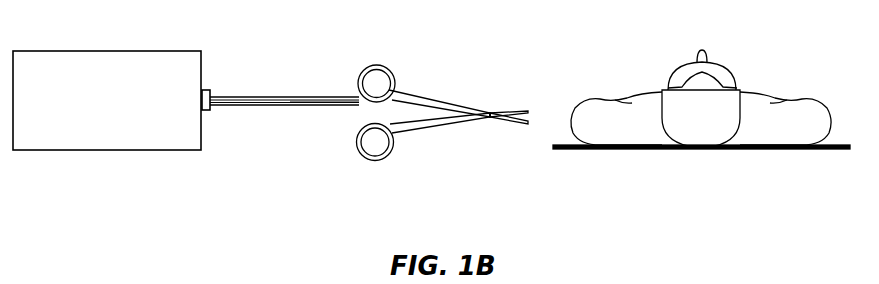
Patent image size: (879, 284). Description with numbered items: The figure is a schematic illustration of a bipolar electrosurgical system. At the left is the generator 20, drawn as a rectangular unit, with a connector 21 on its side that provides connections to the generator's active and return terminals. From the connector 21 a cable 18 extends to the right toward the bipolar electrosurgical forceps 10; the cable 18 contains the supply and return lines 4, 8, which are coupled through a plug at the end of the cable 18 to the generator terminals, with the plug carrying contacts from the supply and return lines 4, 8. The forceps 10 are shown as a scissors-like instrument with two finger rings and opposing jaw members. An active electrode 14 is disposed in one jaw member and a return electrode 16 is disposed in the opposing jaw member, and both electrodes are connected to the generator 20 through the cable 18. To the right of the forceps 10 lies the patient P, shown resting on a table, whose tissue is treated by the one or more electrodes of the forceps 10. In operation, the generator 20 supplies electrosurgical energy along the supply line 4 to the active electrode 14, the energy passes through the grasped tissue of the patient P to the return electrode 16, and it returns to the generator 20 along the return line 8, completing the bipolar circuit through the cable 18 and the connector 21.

The generator 20 is at (165, 51).
The connector 21 is at (205, 89).
The return line 8 is at (238, 97).
The supply line 4 is at (248, 104).
The cable 18 is at (295, 97).
The bipolar electrosurgical forceps 10 is at (418, 102).
The active electrode 14 is at (512, 113).
The return electrode 16 is at (507, 122).
The patient P is at (768, 81).